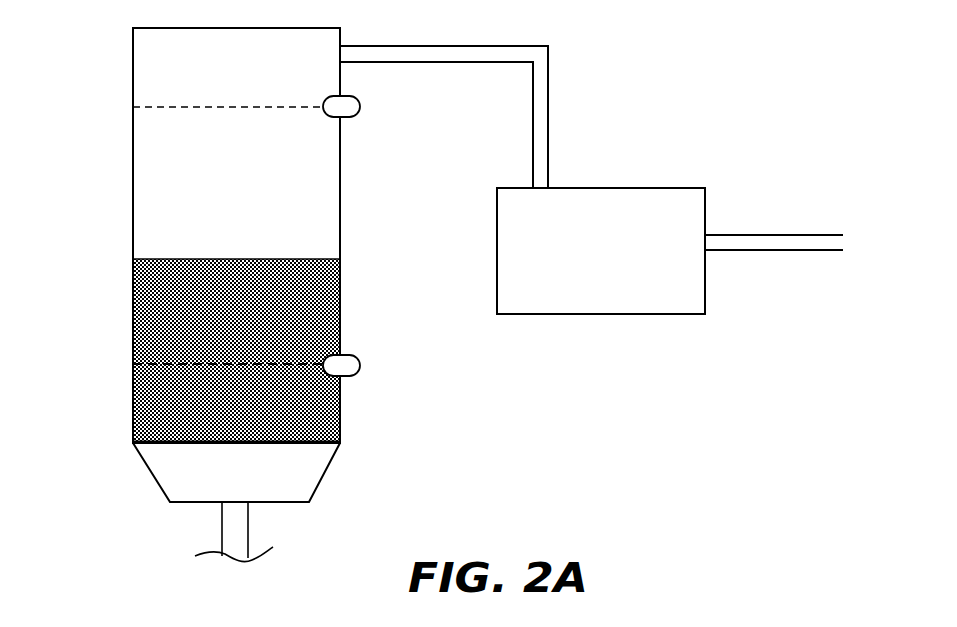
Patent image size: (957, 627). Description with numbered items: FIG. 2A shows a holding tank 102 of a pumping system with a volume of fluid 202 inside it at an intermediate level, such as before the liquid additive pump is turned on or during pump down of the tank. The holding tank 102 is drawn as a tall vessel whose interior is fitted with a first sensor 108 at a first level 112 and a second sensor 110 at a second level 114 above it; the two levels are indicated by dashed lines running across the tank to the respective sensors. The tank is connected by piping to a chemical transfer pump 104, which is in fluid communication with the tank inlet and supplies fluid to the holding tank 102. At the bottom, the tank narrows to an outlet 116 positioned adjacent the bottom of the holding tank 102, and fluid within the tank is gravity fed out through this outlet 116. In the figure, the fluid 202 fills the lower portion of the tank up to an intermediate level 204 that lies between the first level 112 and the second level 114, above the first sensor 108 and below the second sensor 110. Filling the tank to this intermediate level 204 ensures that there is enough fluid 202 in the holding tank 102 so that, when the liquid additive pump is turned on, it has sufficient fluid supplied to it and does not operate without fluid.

The holding tank 102 is at (221, 246).
The chemical transfer pump 104 is at (583, 262).
The first sensor 108 is at (360, 364).
The second sensor 110 is at (360, 106).
The first level 112 is at (133, 364).
The second level 114 is at (133, 107).
The outlet 116 is at (222, 482).
The fluid 202 is at (175, 310).
The intermediate level 204 is at (133, 259).